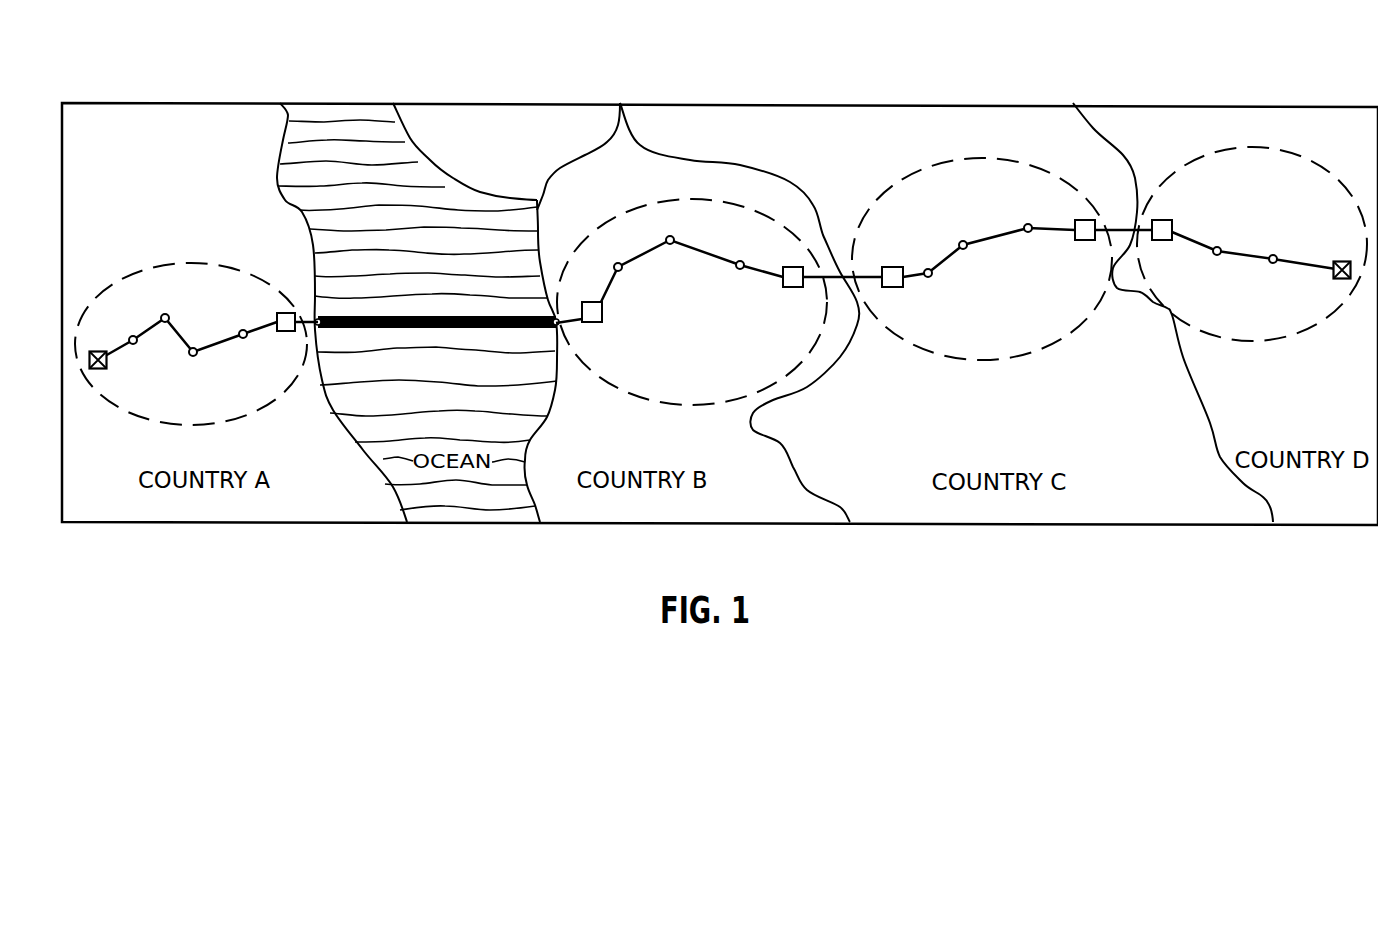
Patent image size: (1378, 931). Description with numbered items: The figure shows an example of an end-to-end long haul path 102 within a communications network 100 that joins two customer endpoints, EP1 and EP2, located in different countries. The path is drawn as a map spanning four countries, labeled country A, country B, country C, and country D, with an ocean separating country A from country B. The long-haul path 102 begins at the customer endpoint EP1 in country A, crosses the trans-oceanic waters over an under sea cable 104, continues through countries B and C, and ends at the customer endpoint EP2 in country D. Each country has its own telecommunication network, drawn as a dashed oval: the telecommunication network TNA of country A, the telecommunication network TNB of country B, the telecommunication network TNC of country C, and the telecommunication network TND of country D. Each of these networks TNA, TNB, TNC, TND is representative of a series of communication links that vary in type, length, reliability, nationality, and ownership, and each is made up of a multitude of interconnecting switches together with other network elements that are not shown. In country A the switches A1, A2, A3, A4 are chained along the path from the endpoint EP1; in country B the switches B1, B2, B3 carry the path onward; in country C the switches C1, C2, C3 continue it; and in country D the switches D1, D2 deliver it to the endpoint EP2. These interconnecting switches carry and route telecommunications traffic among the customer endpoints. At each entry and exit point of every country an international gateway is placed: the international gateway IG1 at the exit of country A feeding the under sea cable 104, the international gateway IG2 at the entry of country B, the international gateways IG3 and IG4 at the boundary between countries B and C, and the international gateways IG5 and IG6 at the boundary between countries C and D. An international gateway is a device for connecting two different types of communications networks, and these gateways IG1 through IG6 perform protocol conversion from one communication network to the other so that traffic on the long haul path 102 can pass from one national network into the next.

The communications network 100 is at (1283, 104).
The end-to-end long haul path 102 is at (181, 323).
The under sea cable 104 is at (448, 314).
The telecommunication network of country A TNA is at (164, 261).
The telecommunication network of country B TNB is at (610, 219).
The telecommunication network of country C TNC is at (937, 163).
The telecommunication network of country D TND is at (1236, 343).
The customer endpoint EP1 is at (97, 348).
The customer endpoint EP2 is at (1343, 256).
The international gateway IG1 is at (284, 335).
The international gateway IG2 is at (600, 324).
The international gateway IG3 is at (802, 290).
The international gateway IG4 is at (899, 291).
The international gateway IG5 is at (1080, 245).
The international gateway IG6 is at (1165, 244).
The interconnecting switch A1 is at (141, 353).
The interconnecting switch A2 is at (155, 305).
The interconnecting switch A3 is at (202, 364).
The interconnecting switch A4 is at (252, 322).
The interconnecting switch B1 is at (625, 252).
The interconnecting switch B2 is at (681, 228).
The interconnecting switch B3 is at (751, 253).
The interconnecting switch C1 is at (941, 284).
The interconnecting switch C2 is at (970, 232).
The interconnecting switch C3 is at (1041, 216).
The interconnecting switch D1 is at (1227, 265).
The interconnecting switch D2 is at (1283, 274).